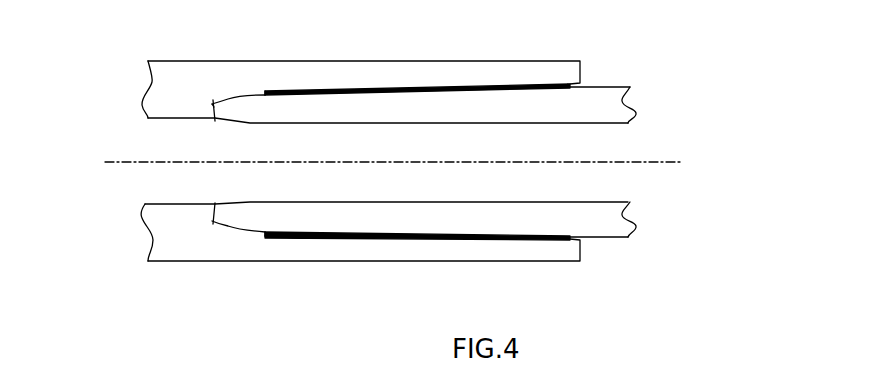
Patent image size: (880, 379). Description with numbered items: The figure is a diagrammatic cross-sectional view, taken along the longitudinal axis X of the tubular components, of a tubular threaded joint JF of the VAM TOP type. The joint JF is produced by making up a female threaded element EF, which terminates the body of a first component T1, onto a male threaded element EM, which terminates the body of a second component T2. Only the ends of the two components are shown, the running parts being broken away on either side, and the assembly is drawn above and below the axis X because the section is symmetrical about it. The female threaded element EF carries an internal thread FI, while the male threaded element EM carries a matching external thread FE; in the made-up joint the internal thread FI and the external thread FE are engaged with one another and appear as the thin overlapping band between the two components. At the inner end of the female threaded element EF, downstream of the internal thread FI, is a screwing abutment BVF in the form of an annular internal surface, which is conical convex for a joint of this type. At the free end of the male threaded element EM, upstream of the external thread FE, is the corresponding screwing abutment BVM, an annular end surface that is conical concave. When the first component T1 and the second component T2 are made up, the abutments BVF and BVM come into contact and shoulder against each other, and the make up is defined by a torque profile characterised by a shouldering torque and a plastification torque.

The female threaded element EF is at (401, 61).
The male threaded element EM is at (312, 123).
The internal thread FI is at (495, 76).
The screwing abutment of the female element BVF is at (196, 105).
The screwing abutment of the male element BVM is at (228, 92).
The external thread FE is at (305, 240).
The tubular threaded joint JF is at (692, 60).
The first component T1 is at (134, 236).
The second component T2 is at (652, 223).
The longitudinal axis X is at (388, 164).